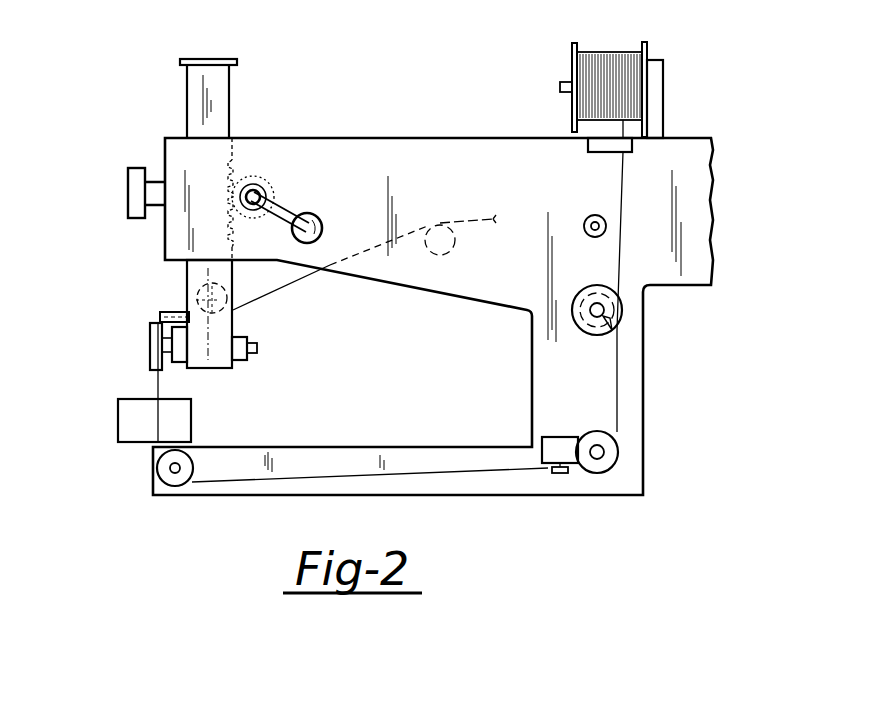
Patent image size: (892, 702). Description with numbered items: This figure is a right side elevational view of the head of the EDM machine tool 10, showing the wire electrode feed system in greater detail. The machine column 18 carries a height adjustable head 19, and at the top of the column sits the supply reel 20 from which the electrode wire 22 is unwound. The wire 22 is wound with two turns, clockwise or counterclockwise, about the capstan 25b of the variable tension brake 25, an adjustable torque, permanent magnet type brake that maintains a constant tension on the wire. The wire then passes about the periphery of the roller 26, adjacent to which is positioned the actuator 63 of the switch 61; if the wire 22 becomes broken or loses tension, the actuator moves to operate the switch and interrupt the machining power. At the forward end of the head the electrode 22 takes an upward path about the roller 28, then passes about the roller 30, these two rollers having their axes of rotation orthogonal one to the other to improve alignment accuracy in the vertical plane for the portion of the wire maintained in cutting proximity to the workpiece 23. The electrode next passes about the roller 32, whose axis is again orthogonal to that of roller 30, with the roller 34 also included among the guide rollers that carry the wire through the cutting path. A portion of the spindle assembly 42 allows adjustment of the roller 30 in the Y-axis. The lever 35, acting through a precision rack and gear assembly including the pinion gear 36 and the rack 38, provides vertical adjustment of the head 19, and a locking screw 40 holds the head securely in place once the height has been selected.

The machine tool 10 is at (477, 277).
The machine column 18 is at (357, 134).
The height adjustable head 19 is at (226, 77).
The supply reel 20 is at (647, 50).
The electrode wire 22 is at (600, 55).
The workpiece 23 is at (132, 422).
The variable tension brake 25 is at (616, 278).
The capstan 25b is at (607, 320).
The guide roller 26 is at (612, 460).
The guide roller 28 is at (185, 462).
The guide roller 30 is at (150, 342).
The guide roller 32 is at (175, 310).
The guide roller 34 is at (233, 288).
The lever 35 is at (314, 218).
The pinion gear 36 is at (265, 168).
The rack 38 is at (232, 162).
The locking screw 40 is at (130, 190).
The spindle assembly 42 is at (243, 365).
The switch 61 is at (563, 445).
The actuator 63 is at (566, 474).